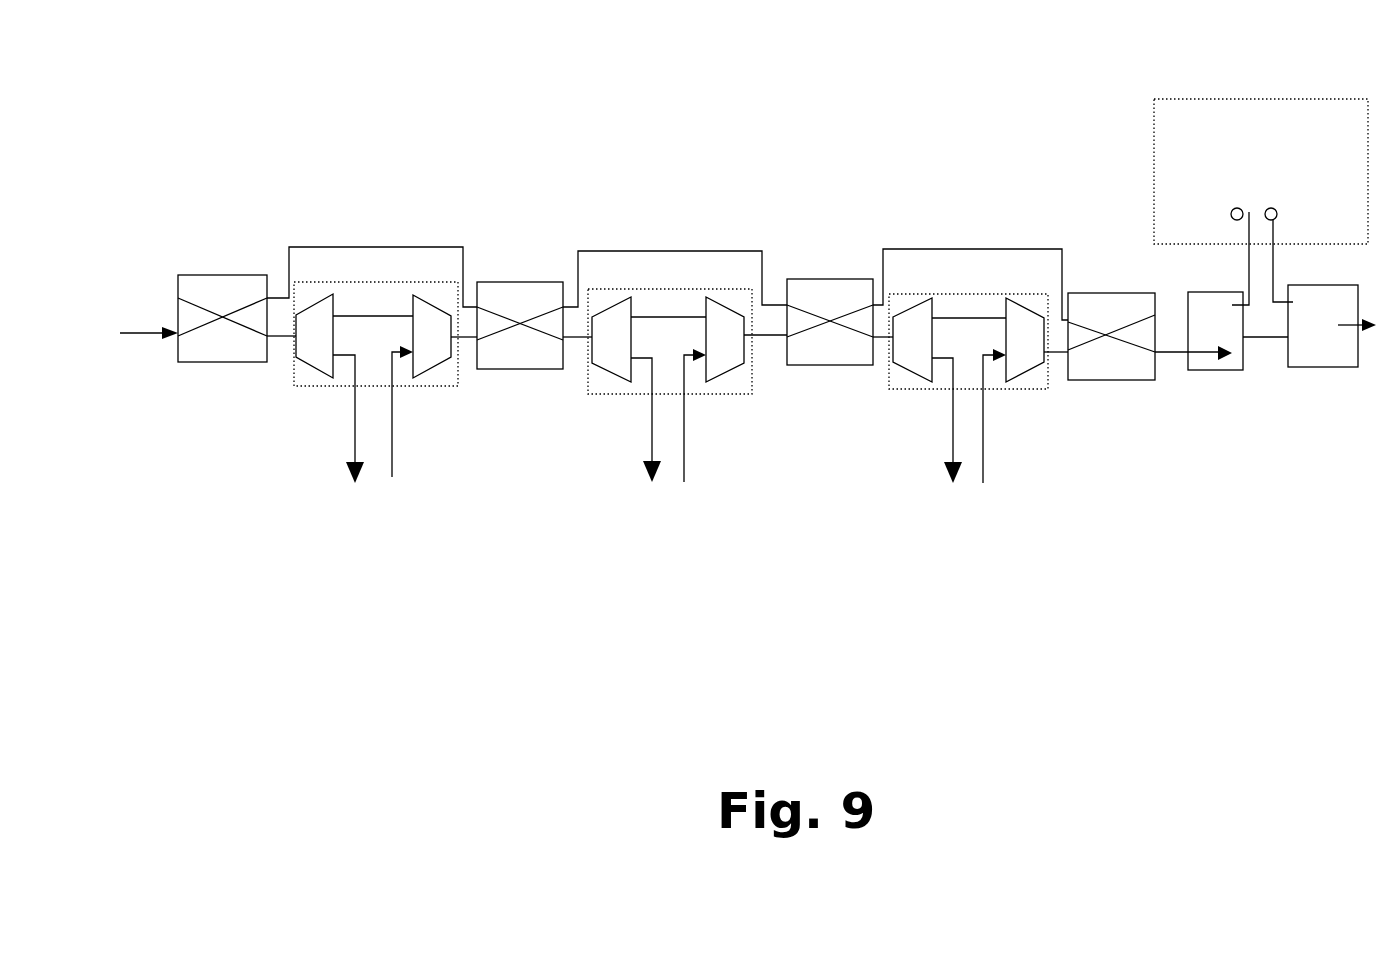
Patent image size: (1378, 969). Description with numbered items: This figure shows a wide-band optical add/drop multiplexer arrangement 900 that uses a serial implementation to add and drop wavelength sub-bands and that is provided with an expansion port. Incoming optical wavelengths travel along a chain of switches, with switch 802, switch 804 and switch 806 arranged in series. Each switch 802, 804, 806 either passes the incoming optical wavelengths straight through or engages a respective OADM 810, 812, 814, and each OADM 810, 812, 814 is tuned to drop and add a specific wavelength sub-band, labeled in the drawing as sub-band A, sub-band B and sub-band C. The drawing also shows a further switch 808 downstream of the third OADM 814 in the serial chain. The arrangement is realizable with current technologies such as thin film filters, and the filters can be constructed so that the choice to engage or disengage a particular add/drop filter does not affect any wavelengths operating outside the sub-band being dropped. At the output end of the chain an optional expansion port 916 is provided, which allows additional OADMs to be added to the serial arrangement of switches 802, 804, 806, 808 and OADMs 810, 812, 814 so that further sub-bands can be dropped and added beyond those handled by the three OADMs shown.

The multi-band amplifier system 900 is at (147, 124).
The switch 802 is at (187, 277).
The switch 804 is at (517, 283).
The switch 806 is at (823, 277).
The switch 808 is at (1127, 295).
The OADM 810 is at (300, 395).
The OADM 812 is at (593, 394).
The OADM 814 is at (899, 397).
The expansion port 916 is at (1154, 142).